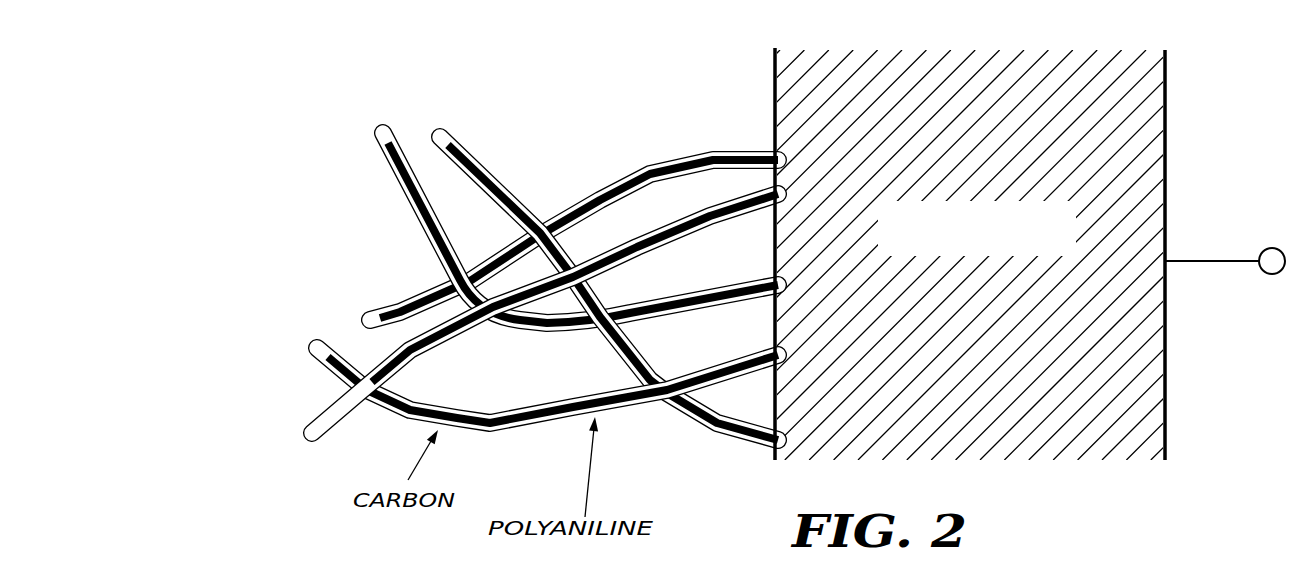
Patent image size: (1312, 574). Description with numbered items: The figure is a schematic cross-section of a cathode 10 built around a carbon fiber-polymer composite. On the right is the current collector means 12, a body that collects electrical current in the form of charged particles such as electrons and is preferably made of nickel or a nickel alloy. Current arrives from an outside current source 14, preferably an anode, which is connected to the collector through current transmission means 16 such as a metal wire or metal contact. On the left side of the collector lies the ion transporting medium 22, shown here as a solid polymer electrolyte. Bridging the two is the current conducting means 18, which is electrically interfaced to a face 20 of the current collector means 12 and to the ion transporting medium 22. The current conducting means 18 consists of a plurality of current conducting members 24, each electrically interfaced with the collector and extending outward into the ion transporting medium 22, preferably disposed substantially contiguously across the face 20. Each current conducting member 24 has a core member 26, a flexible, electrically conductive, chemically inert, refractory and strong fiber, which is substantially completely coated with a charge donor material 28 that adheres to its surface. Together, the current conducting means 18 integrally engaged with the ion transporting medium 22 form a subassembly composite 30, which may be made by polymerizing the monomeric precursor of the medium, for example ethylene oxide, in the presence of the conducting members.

The cathode 10 is at (1212, 203).
The current collector means 12 is at (933, 83).
The outside current source 14 is at (1282, 251).
The current transmission means 16 is at (1208, 262).
The current conducting means 18 is at (327, 437).
The face 20 is at (773, 453).
The ion transporting medium 22 is at (167, 212).
The current conducting members 24 is at (487, 349).
The core member 26 is at (384, 130).
The charge donor material 28 is at (443, 130).
The subassembly composite 30 is at (132, 314).